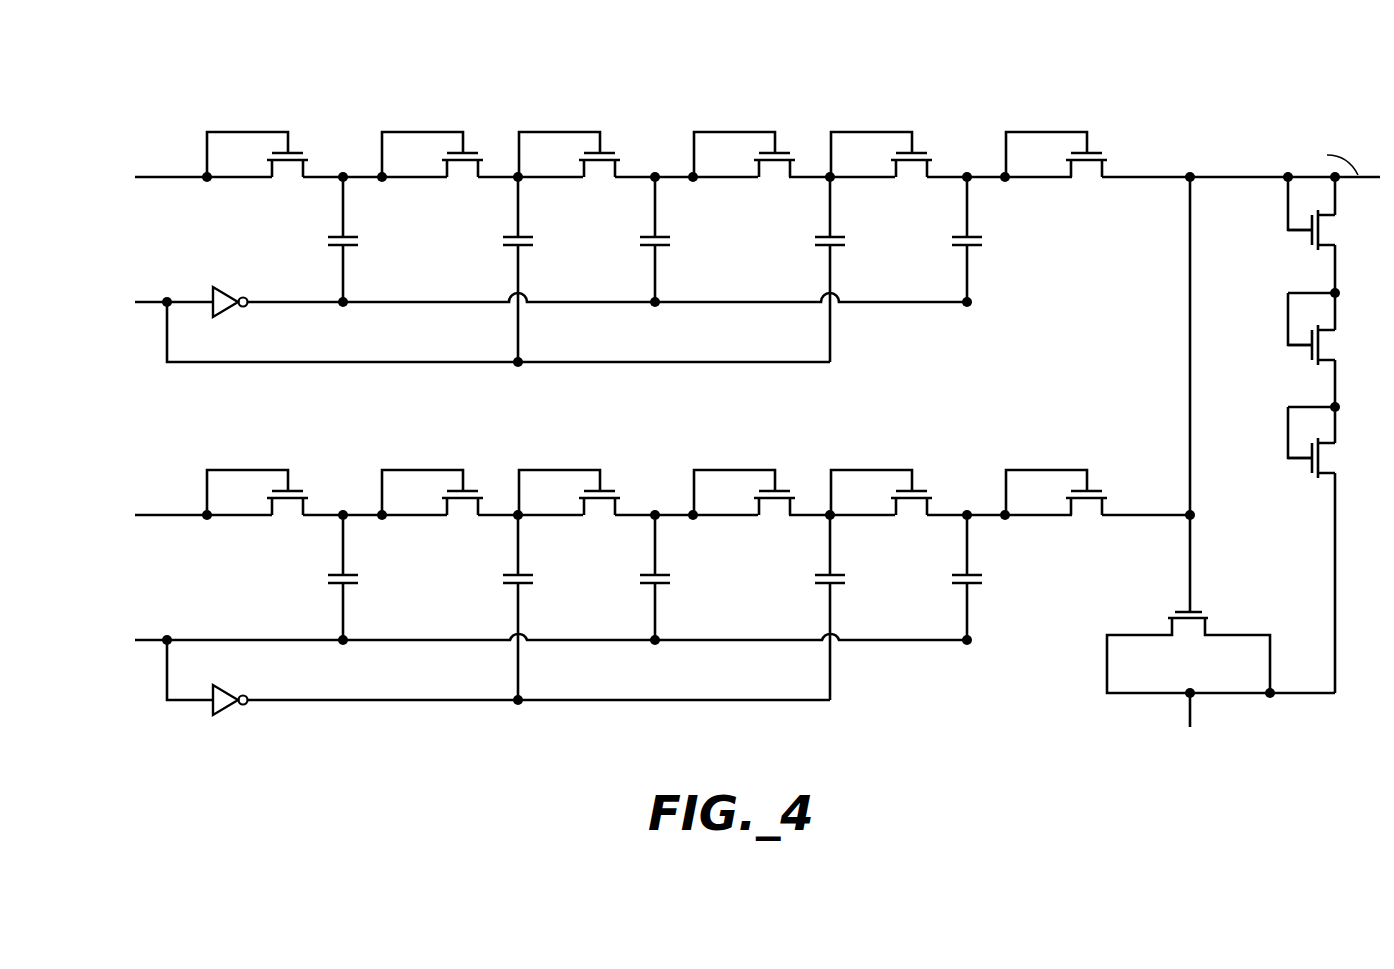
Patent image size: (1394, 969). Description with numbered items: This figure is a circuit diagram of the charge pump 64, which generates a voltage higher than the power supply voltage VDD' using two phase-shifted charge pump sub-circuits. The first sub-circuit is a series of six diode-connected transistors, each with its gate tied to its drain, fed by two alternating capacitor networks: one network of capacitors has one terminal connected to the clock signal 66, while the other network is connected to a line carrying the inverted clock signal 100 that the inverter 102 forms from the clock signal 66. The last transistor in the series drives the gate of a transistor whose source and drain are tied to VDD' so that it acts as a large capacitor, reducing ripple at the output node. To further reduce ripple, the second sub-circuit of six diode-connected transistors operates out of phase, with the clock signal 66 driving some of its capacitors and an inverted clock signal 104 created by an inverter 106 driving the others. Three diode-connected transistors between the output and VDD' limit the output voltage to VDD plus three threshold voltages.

The charge pump 64 is at (767, 68).
The clock signal 66 is at (100, 288).
The inverted clock signal 100 is at (277, 305).
The inverter 102 is at (231, 287).
The inverted clock signal 104 is at (277, 704).
The inverter 106 is at (231, 687).